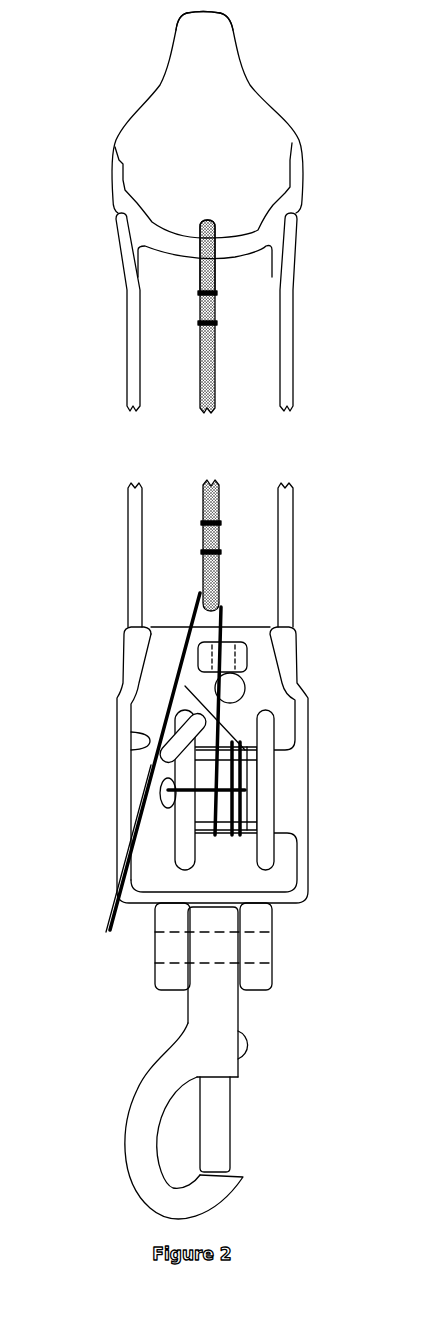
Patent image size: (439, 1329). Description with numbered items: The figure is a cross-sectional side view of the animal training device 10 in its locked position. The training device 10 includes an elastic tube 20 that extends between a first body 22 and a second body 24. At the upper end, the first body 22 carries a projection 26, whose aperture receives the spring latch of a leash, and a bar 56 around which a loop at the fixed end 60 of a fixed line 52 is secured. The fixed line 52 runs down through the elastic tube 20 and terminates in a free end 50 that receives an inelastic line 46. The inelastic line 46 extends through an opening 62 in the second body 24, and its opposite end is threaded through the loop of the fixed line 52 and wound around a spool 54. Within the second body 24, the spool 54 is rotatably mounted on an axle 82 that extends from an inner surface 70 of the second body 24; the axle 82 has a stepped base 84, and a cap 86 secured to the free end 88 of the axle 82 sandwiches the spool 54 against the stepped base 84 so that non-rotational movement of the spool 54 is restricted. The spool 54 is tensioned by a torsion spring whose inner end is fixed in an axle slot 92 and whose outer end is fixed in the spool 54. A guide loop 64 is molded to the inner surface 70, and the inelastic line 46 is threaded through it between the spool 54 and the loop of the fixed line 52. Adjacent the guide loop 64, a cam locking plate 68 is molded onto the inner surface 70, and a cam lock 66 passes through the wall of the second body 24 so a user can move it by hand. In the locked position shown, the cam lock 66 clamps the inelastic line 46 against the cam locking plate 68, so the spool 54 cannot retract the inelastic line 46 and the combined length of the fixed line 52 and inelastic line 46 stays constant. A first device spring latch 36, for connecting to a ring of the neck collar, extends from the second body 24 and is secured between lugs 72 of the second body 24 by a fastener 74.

The training device 10 is at (324, 437).
The elastic tube 20 is at (132, 378).
The first body 22 is at (167, 142).
The second body 24 is at (300, 728).
The projection 26 is at (210, 32).
The first device spring latch 36 is at (212, 1057).
The inelastic line 46 is at (105, 922).
The free end 50 is at (203, 502).
The fixed line 52 is at (213, 372).
The spool 54 is at (267, 843).
The bar 56 is at (253, 237).
The fixed end 60 is at (197, 278).
The opening 62 is at (118, 875).
The guide loop 64 is at (240, 658).
The cam lock 66 is at (233, 690).
The cam locking plate 68 is at (200, 688).
The inner surface 70 is at (150, 743).
The lugs 72 is at (257, 973).
The fastener 74 is at (252, 957).
The axle 82 is at (190, 810).
The stepped base 84 is at (278, 823).
The cap 86 is at (150, 789).
The free end 88 is at (157, 762).
The axle slot 92 is at (207, 797).